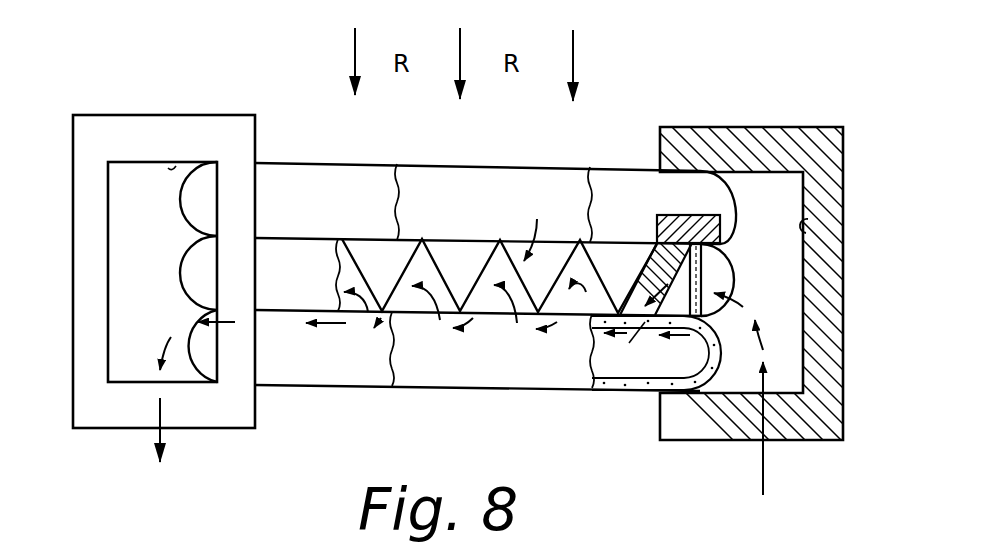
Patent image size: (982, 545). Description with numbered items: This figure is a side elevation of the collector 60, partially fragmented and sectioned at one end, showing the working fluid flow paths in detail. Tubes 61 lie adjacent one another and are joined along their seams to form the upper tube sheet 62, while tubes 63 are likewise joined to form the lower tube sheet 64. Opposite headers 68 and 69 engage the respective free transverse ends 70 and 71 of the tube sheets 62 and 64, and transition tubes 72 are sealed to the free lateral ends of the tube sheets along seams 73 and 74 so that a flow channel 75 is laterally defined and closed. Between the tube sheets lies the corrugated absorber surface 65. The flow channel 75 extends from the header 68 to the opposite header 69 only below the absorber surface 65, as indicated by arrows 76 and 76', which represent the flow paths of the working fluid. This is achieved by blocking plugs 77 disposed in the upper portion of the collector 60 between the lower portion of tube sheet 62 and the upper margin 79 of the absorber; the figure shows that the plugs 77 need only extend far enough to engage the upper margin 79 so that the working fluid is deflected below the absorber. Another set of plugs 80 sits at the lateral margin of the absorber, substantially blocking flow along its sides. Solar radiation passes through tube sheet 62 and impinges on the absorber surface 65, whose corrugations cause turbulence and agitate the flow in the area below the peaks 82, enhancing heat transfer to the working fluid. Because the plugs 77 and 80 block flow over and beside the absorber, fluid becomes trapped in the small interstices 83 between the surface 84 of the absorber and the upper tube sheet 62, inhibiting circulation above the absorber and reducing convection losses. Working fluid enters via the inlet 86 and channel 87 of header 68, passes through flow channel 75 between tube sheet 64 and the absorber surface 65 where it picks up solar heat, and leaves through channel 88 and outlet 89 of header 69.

The collector 60 is at (746, 103).
The tubes 61 is at (342, 204).
The tube sheet 62 is at (366, 178).
The tubes 63 is at (342, 370).
The tube sheet 64 is at (292, 372).
The absorber surface 65 is at (437, 257).
The header 68 is at (686, 127).
The header 69 is at (140, 115).
The free transverse end 70 is at (179, 188).
The free transverse end 71 is at (192, 321).
The transition tubes 72 is at (308, 282).
The seam 73 is at (283, 238).
The seam 74 is at (277, 313).
The flow channel 75 is at (491, 319).
The arrow 76 is at (347, 351).
The arrow 76' is at (440, 333).
The blocking plug 77 is at (685, 220).
The upper margin 79 is at (660, 243).
The plug 80 is at (656, 353).
The peaks 82 is at (416, 264).
The interstices 83 is at (377, 265).
The surface 84 is at (535, 226).
The inlet 86 is at (808, 226).
The channel 87 is at (783, 302).
The channel 88 is at (127, 213).
The outlet 89 is at (171, 170).